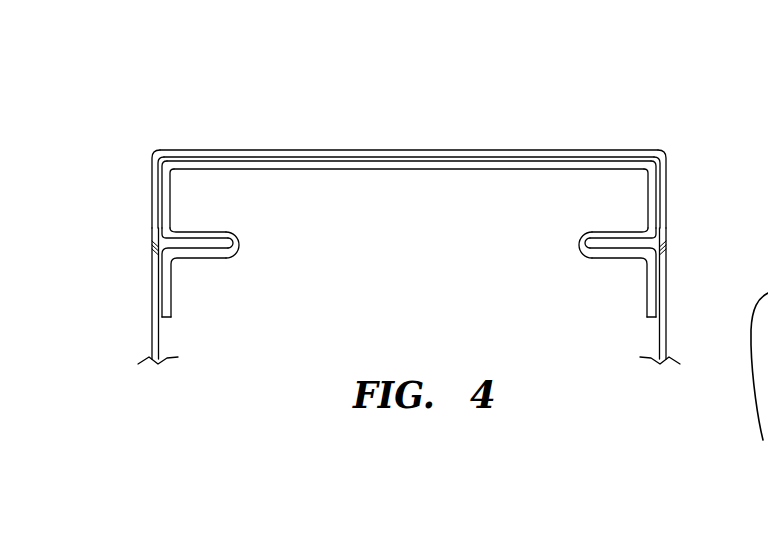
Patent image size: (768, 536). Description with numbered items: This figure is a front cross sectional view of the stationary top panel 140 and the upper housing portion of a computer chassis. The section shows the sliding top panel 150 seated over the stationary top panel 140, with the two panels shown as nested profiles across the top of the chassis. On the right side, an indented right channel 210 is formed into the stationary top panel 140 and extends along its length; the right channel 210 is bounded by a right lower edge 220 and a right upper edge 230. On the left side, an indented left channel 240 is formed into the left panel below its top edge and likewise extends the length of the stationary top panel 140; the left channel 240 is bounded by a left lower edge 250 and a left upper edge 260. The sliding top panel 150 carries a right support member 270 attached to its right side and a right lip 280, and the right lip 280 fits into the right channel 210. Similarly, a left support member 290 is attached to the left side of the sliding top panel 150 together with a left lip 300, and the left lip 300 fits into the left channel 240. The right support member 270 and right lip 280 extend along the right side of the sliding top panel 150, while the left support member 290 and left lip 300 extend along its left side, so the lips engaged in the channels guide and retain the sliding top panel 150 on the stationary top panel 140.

The stationary top panel 140 is at (391, 173).
The sliding top panel 150 is at (378, 150).
The right channel 210 is at (665, 250).
The right lower edge 220 is at (612, 259).
The right upper edge 230 is at (612, 232).
The left channel 240 is at (153, 248).
The left lower edge 250 is at (206, 259).
The left upper edge 260 is at (204, 232).
The right support member 270 is at (668, 199).
The right lip 280 is at (655, 243).
The left support member 290 is at (151, 199).
The left lip 300 is at (182, 238).